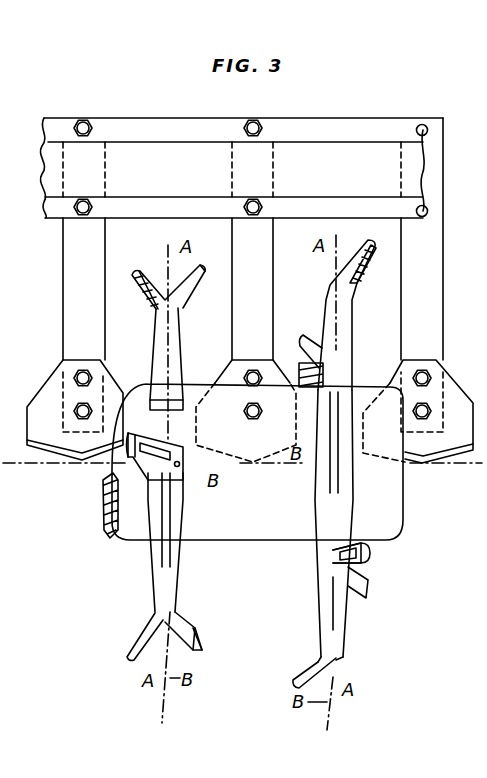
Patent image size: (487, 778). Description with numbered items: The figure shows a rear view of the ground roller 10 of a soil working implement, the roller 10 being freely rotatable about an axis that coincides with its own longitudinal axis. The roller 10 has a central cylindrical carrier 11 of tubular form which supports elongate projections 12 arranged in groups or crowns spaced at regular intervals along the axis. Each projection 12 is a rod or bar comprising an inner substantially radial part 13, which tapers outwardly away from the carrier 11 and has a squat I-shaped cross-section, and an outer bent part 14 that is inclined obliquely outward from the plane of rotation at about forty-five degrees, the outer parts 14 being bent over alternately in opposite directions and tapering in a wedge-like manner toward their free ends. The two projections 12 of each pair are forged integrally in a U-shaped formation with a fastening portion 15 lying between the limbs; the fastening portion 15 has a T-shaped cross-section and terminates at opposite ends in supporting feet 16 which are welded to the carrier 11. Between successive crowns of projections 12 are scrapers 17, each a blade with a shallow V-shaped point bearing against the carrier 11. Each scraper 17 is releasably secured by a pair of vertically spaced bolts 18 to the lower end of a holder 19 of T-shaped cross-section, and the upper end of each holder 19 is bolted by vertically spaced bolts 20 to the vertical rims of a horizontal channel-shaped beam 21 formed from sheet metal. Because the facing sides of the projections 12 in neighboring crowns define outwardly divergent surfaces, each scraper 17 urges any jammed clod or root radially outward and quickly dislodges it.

The ground roller 10 is at (288, 573).
The central cylindrical carrier 11 is at (143, 541).
The elongate projection 12 is at (145, 349).
The inner substantially radial part 13 is at (178, 348).
The outer bent part 14 is at (200, 266).
The fastening portion 15 is at (180, 515).
The supporting foot 16 is at (180, 411).
The scraper 17 is at (55, 378).
The bolt 18 is at (75, 391).
The holder 19 is at (66, 268).
The bolt 20 is at (92, 134).
The beam 21 is at (45, 156).